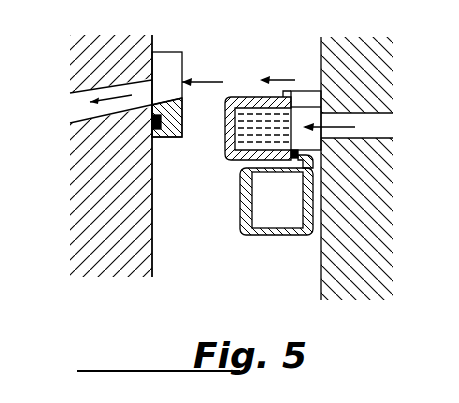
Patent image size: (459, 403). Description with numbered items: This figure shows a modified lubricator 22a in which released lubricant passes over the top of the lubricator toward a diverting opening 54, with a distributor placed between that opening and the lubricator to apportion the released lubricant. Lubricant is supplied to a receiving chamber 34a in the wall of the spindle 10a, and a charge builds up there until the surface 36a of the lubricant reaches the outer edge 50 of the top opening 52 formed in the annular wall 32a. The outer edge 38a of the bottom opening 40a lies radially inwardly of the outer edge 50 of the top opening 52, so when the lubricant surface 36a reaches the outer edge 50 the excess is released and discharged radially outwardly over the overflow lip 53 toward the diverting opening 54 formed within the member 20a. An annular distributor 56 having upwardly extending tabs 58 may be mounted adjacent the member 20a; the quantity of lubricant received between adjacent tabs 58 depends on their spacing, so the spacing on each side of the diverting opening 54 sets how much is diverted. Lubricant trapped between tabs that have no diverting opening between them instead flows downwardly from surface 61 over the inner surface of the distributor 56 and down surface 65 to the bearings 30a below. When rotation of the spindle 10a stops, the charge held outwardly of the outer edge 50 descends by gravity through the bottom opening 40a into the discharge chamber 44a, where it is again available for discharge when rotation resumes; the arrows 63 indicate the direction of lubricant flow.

The spindle 10a is at (363, 280).
The member 20a is at (100, 231).
The lubricator 22a is at (242, 247).
The bearings 30a is at (378, 119).
The annular wall 32a is at (235, 163).
The receiving chamber 34a is at (317, 113).
The surface of the lubricant 36a is at (282, 137).
The outer edge of bottom opening 38a is at (302, 161).
The bottom opening 40a is at (318, 155).
The discharge chamber 44a is at (284, 218).
The outer edge of top opening 50 is at (300, 90).
The top opening 52 is at (315, 100).
The overflow lip 53 is at (286, 90).
The diverting opening 54 is at (88, 92).
The annular distributor 56 is at (172, 133).
The tabs 58 is at (170, 74).
The surface 61 is at (176, 92).
The flow arrow 63 is at (182, 53).
The surface 65 is at (152, 204).